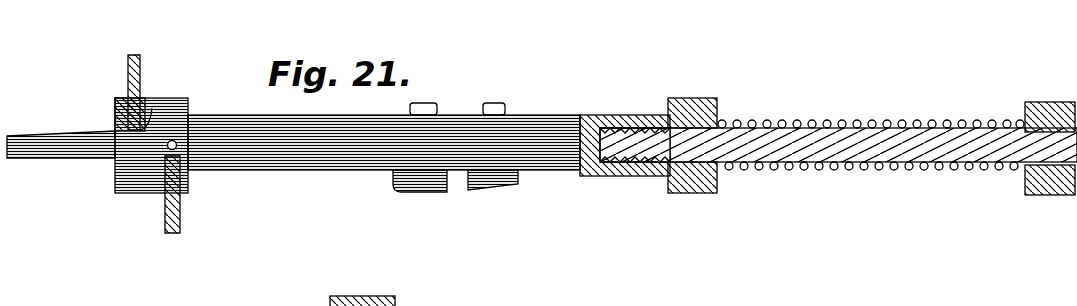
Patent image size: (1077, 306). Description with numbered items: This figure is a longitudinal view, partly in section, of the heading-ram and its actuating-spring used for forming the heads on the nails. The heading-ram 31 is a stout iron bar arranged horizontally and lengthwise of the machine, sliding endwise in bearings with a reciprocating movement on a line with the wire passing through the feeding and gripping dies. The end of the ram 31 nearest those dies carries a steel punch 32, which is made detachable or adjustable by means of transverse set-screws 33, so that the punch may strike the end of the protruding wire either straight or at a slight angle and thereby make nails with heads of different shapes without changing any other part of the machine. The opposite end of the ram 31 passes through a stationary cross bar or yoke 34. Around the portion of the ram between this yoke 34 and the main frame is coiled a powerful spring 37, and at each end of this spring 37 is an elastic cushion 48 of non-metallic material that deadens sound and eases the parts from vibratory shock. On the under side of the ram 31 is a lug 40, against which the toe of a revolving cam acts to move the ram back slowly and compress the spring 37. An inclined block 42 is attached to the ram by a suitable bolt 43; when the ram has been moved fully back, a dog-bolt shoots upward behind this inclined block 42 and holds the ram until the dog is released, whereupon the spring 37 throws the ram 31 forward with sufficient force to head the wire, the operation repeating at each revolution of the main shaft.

The heading-ram 31 is at (384, 157).
The steel punch 32 is at (61, 155).
The transverse set-screws 33 is at (144, 144).
The cross bar or yoke 34 is at (1050, 139).
The spring 37 is at (852, 126).
The lug 40 is at (420, 192).
The inclined block 42 is at (493, 189).
The bolt 43 is at (471, 104).
The elastic cushion 48 is at (1025, 180).